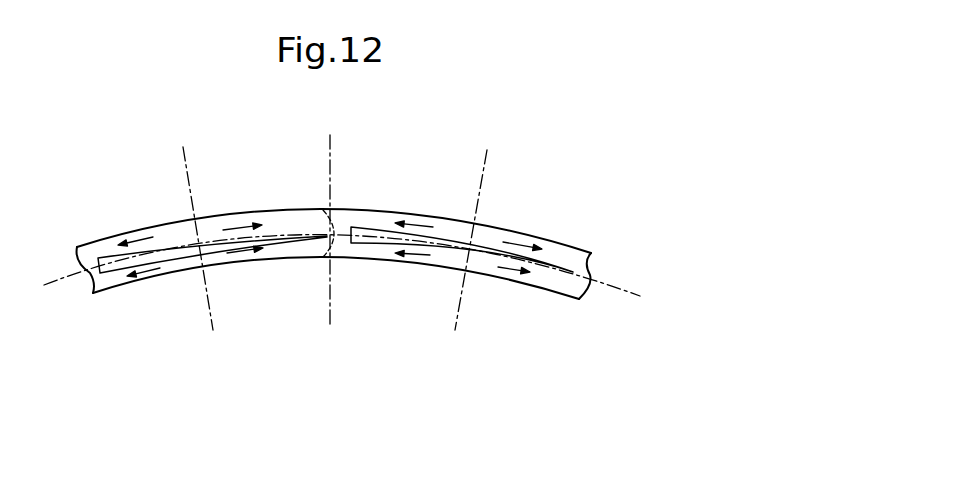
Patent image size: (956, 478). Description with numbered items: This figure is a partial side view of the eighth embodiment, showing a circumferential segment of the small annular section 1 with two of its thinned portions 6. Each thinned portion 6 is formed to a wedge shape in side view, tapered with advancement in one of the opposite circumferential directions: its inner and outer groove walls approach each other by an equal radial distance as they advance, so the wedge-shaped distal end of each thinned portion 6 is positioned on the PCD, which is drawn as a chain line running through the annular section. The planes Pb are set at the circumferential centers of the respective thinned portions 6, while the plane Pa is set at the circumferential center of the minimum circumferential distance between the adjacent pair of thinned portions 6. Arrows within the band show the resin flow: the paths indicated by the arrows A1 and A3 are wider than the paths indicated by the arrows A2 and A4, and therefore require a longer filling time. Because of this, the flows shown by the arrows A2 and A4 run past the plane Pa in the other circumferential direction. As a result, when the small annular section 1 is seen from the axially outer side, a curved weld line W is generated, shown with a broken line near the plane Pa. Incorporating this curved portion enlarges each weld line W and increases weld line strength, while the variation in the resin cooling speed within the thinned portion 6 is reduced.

The small annular section 1 is at (568, 175).
The thinned portion 6 is at (173, 241).
The element PCD is at (620, 287).
The plane Pa is at (332, 168).
The plane Pb is at (190, 182).
The weld line W is at (325, 252).
The arrow A1 is at (386, 213).
The arrow A2 is at (274, 213).
The arrow A3 is at (378, 282).
The arrow A4 is at (278, 284).